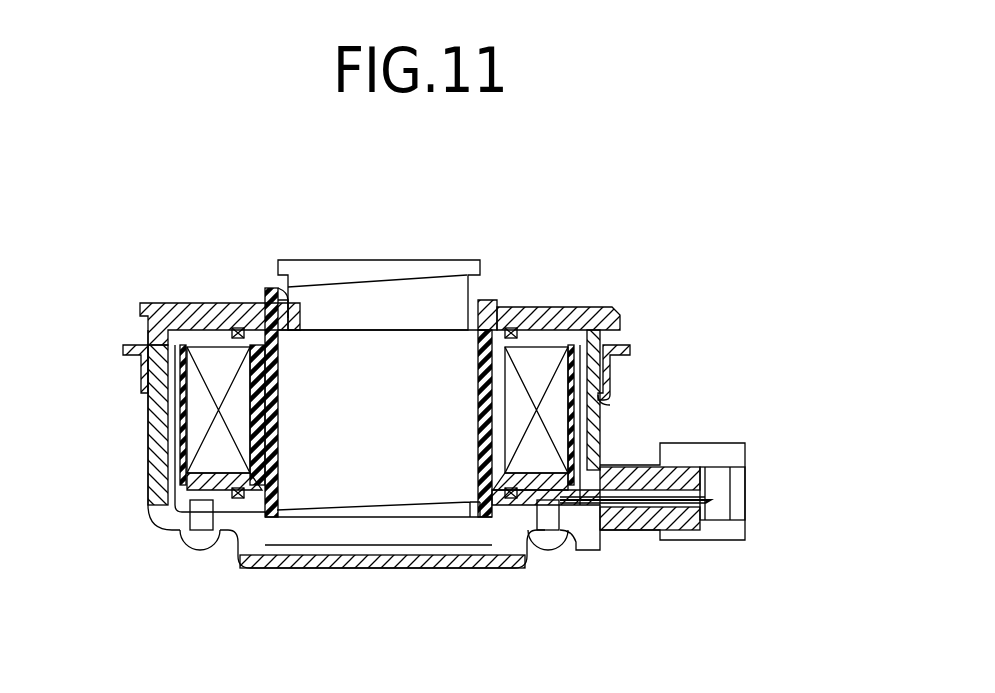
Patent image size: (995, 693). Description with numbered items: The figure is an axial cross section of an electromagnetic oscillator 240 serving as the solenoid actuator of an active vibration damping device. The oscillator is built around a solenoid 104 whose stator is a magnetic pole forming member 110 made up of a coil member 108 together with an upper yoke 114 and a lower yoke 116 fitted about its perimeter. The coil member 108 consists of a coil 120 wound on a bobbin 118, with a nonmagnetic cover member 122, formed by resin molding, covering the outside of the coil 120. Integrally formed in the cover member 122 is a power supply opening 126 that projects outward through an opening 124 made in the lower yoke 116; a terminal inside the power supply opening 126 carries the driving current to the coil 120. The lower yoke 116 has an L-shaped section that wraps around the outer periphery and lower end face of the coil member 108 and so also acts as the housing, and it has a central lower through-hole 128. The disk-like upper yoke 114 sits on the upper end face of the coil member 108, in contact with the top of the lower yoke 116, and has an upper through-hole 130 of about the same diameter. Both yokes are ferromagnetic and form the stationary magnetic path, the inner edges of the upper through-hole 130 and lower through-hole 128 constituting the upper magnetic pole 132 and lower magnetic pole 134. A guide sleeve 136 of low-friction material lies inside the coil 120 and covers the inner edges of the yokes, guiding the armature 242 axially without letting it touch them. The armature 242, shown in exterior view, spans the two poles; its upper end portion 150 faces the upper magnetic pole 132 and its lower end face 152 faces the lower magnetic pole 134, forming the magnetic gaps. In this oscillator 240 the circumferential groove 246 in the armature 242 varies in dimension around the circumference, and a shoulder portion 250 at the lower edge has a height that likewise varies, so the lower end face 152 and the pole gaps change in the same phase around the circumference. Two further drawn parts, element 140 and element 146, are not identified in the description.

The solenoid 104 is at (585, 251).
The coil member 108 is at (600, 430).
The magnetic pole forming member 110 is at (642, 306).
The upper yoke 114 is at (195, 310).
The lower yoke 116 is at (162, 414).
The bobbin 118 is at (612, 348).
The coil 120 is at (570, 390).
The cover member 122 is at (576, 330).
The opening 124 is at (600, 410).
The power supply opening 126 is at (690, 445).
The lower through-hole 128 is at (286, 546).
The upper through-hole 130 is at (272, 292).
The upper magnetic pole 132 is at (490, 300).
The lower magnetic pole 134 is at (498, 542).
The guide sleeve 136 is at (245, 428).
The mounting flange 140 is at (135, 345).
The bottom plate 146 is at (366, 566).
The upper end portion 150 is at (322, 262).
The lower end face 152 is at (418, 505).
The electromagnetic oscillator 240 is at (565, 206).
The armature 242 is at (420, 248).
The circumferential groove 246 is at (270, 300).
The shoulder portion 250 is at (462, 512).